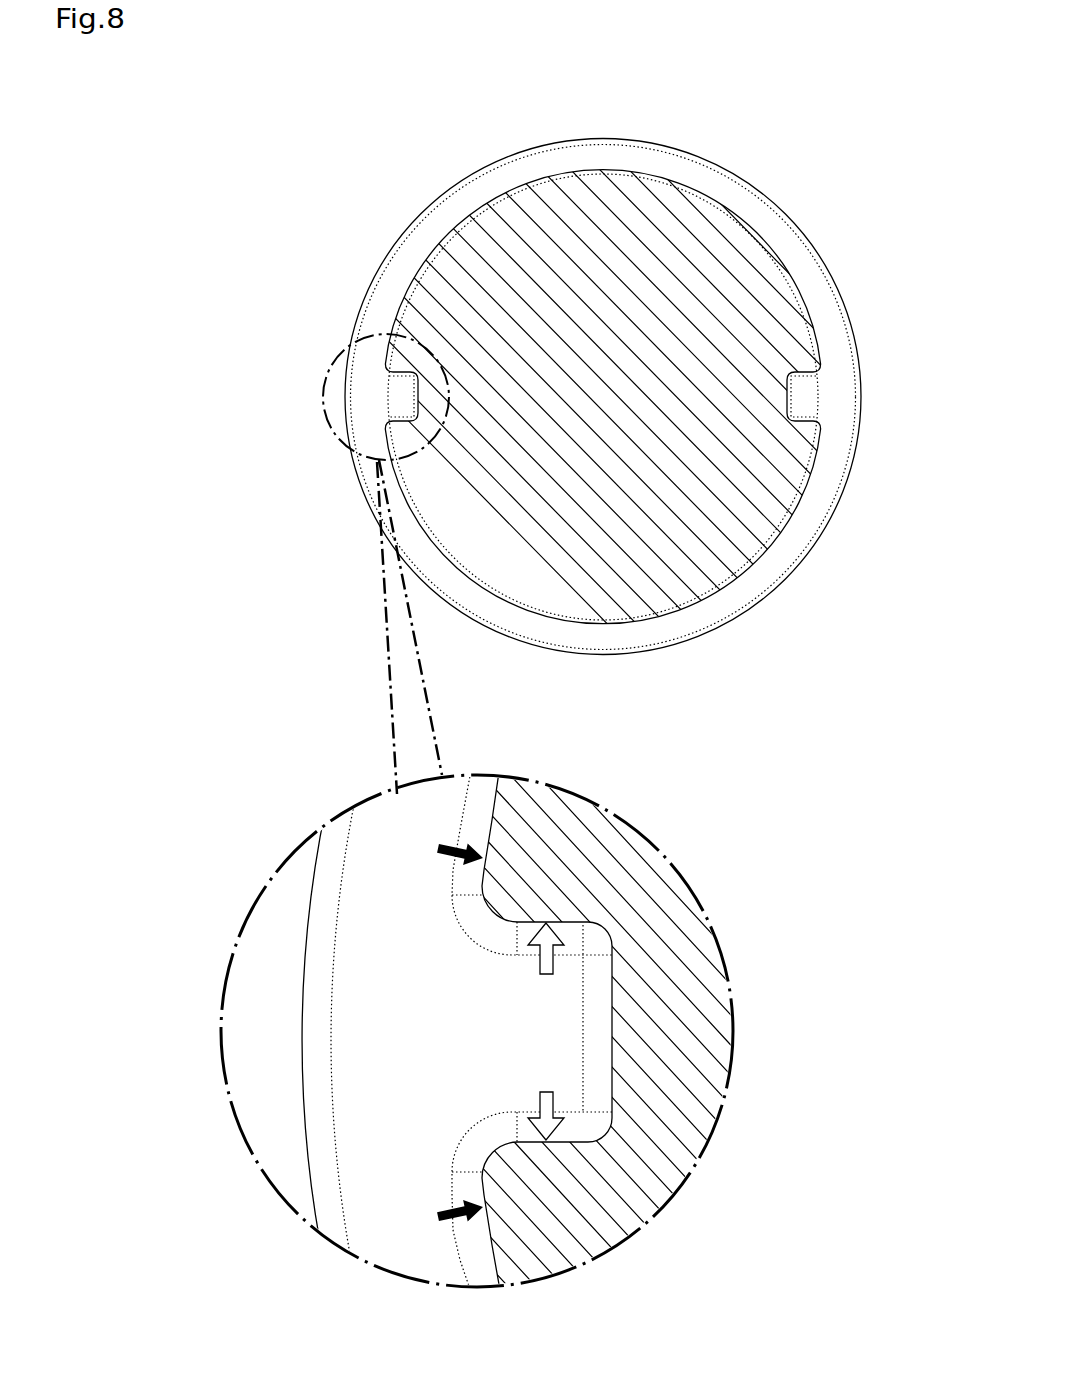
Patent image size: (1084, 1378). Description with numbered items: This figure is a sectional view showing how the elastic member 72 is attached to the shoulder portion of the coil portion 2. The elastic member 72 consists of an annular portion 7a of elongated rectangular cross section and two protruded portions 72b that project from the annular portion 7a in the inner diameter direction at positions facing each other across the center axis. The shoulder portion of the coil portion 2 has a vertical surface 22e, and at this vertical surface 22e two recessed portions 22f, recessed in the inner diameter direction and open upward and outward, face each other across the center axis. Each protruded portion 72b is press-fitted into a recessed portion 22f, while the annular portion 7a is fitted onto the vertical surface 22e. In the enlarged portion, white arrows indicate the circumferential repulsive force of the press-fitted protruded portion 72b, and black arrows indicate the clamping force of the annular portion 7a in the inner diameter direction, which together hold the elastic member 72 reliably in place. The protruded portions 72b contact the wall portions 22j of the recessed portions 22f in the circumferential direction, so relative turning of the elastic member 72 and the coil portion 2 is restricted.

The coil portion 2 is at (704, 201).
The elastic member 72 is at (786, 202).
The vertical surface 22e is at (795, 292).
The recessed portion 22f is at (514, 820).
The wall portion 22j is at (532, 1030).
The protruded portion 72b is at (554, 1028).
The annular portion 7a is at (397, 1200).